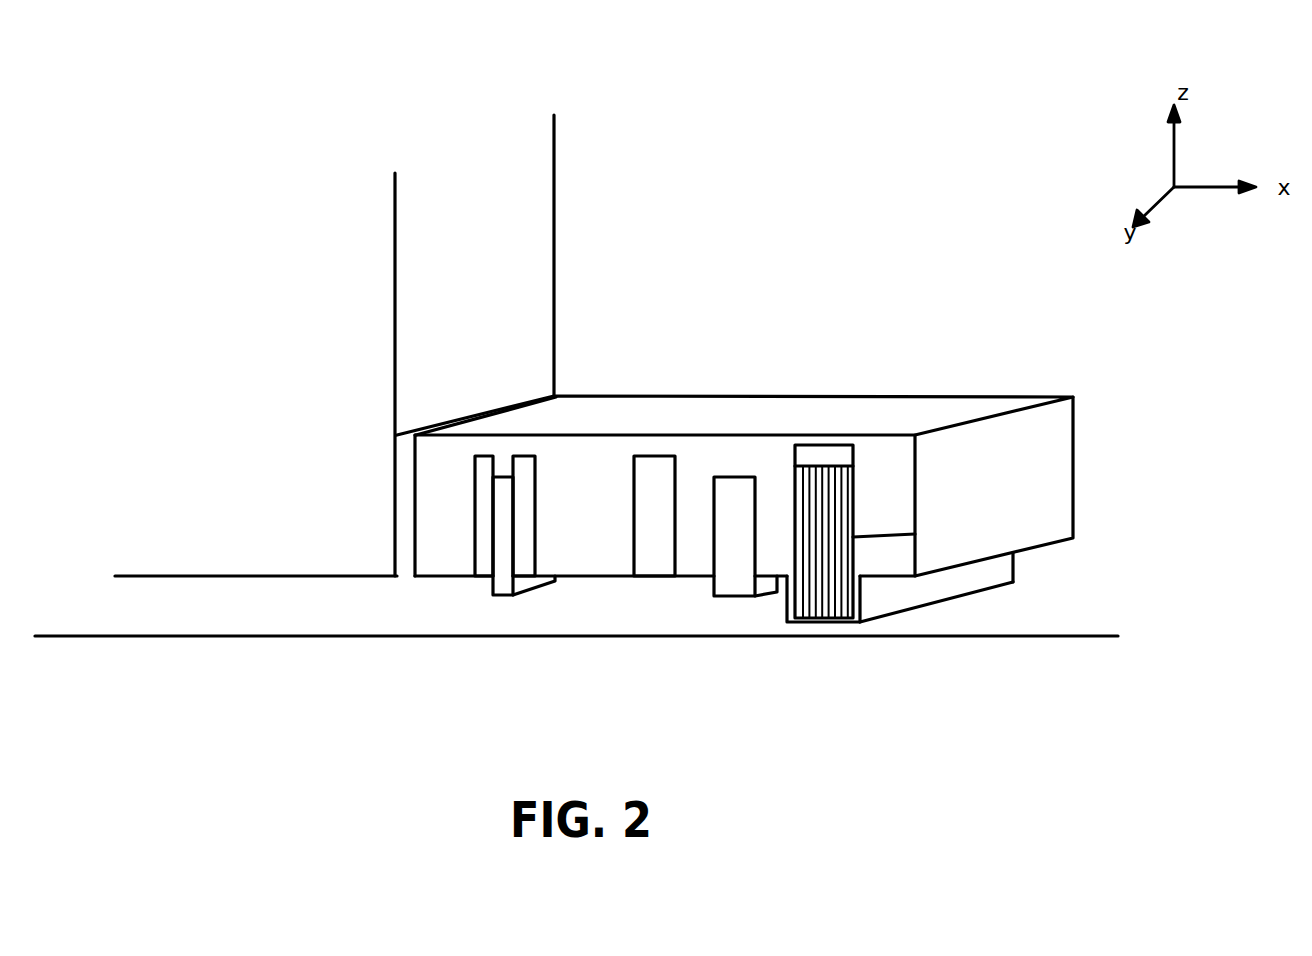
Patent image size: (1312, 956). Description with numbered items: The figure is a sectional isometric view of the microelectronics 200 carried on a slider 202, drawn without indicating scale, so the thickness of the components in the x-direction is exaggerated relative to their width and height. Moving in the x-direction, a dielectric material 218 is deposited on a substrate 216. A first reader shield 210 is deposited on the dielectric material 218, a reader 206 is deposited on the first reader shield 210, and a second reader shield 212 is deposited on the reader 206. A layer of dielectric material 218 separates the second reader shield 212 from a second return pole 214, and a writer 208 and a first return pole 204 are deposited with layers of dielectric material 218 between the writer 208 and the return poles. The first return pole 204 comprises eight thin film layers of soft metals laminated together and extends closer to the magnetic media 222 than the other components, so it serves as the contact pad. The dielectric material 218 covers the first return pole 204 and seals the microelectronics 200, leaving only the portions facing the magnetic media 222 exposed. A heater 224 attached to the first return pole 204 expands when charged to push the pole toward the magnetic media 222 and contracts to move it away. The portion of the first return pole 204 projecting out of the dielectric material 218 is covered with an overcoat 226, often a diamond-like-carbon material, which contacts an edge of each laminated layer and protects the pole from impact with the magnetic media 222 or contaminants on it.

The microelectronics 200 is at (420, 368).
The slider 202 is at (338, 507).
The first return pole 204 is at (913, 534).
The reader 206 is at (505, 597).
The writer 208 is at (735, 477).
The first reader shield 210 is at (490, 456).
The second reader shield 212 is at (530, 456).
The second return pole 214 is at (655, 456).
The substrate 216 is at (403, 576).
The dielectric material 218 is at (606, 521).
The magnetic media 222 is at (598, 685).
The heater 224 is at (827, 445).
The overcoat 226 is at (830, 620).